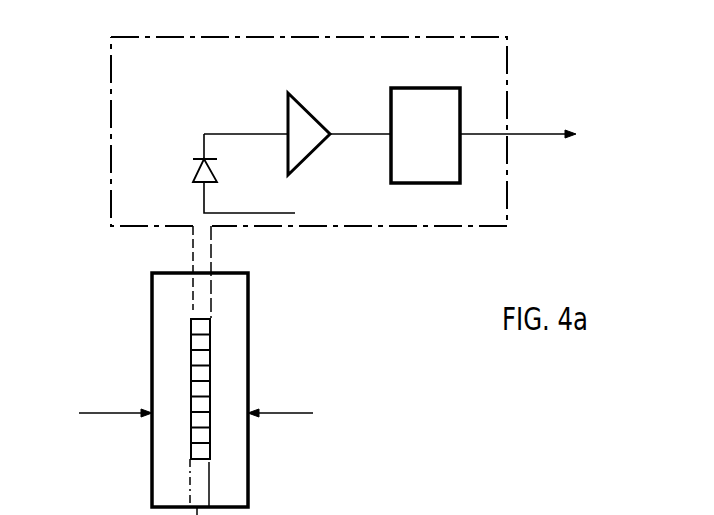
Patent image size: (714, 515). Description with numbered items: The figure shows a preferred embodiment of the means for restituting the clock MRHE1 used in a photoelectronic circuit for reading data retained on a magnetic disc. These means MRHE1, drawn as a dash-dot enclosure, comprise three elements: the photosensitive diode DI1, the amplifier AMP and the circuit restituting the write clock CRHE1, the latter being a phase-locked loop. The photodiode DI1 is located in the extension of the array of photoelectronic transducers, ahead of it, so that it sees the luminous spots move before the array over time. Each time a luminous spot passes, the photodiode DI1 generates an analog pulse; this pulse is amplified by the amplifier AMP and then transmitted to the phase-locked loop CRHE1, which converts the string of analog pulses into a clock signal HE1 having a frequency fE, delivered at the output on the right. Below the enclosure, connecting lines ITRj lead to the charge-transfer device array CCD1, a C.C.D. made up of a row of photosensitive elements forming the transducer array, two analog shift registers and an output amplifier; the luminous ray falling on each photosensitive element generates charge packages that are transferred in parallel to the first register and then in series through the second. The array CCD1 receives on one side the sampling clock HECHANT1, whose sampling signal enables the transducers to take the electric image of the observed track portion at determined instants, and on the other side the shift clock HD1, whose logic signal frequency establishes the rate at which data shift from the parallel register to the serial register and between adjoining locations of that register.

The means for restituting the clock MRHE1 is at (507, 200).
The photosensitive diode DI1 is at (224, 173).
The amplifier AMP is at (305, 150).
The circuit restituting the write clock CRHE1 is at (425, 135).
The clock signal HE1 is at (543, 127).
The frequency of the clock signal fE is at (609, 175).
The transfer interconnection lines ITRj is at (212, 247).
The charge-transfer device array CCD1 is at (249, 300).
The sampling clock HECHANT1 is at (93, 399).
The shift clock HD1 is at (280, 401).